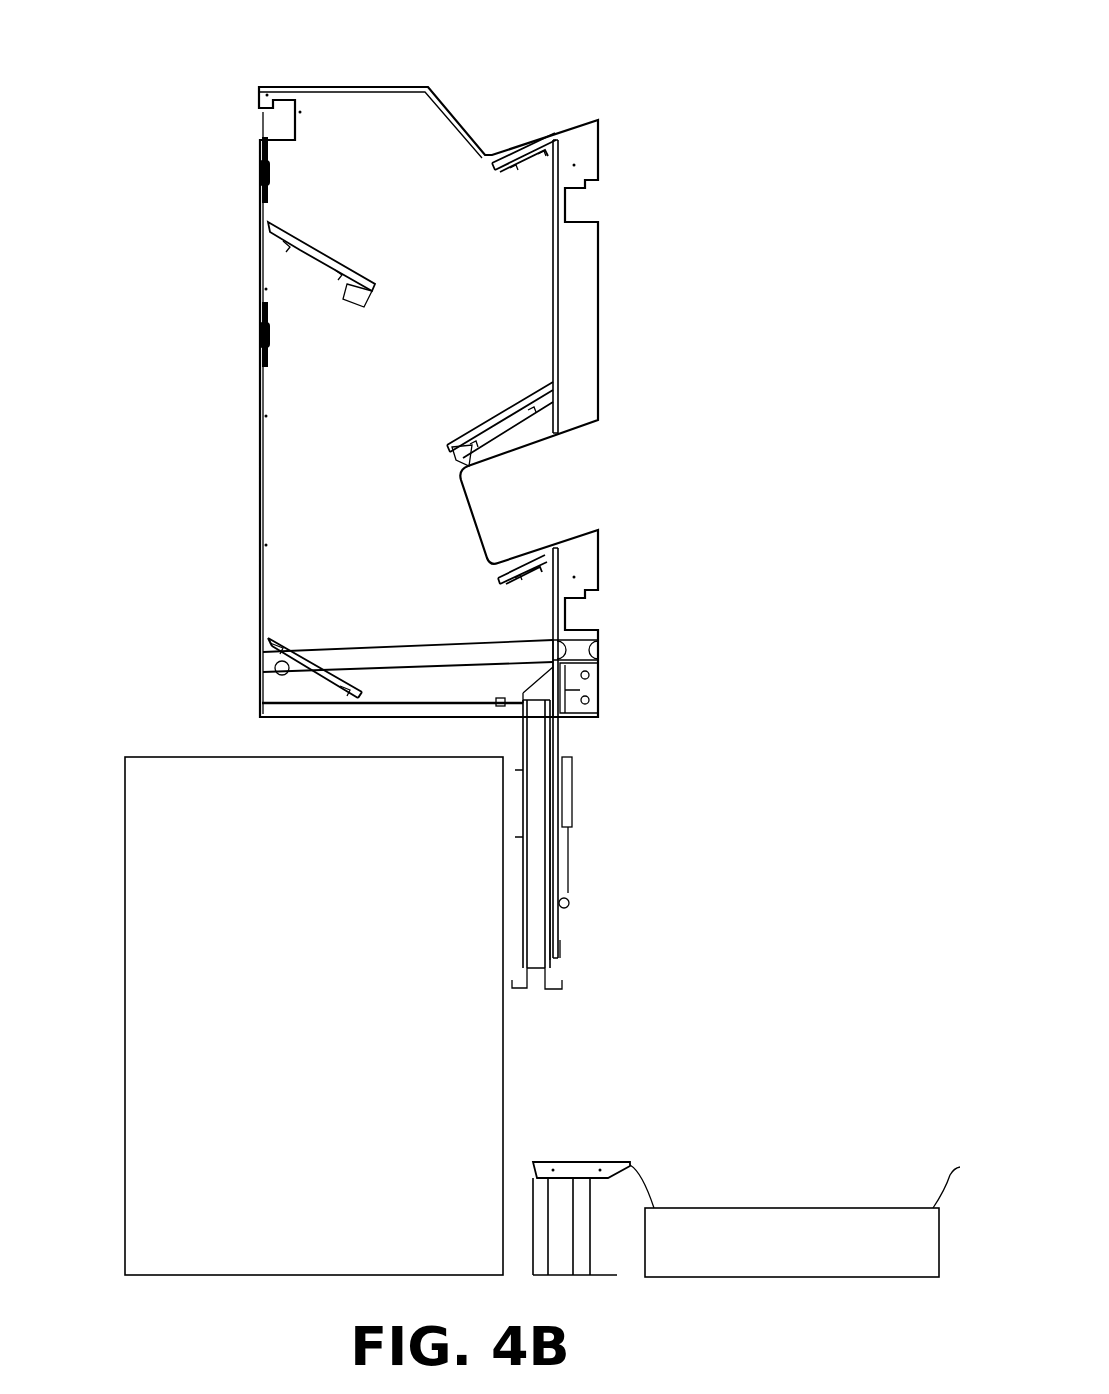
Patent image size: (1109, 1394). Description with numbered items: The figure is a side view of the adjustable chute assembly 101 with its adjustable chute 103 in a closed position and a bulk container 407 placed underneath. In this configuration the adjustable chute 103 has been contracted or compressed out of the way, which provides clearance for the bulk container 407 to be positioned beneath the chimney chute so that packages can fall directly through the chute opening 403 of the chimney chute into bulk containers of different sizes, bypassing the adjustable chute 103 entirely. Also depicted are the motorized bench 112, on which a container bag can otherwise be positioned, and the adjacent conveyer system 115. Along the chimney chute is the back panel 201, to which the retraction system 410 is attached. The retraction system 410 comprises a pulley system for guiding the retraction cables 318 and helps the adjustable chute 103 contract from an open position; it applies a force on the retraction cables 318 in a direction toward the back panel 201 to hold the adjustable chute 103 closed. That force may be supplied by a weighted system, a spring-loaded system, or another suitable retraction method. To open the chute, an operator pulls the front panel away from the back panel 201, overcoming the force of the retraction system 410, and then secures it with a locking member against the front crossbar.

The adjustable chute assembly 101 is at (646, 58).
The adjustable chute 103 is at (543, 1012).
The motorized bench 112 is at (580, 1162).
The conveyer system 115 is at (755, 1277).
The back panel 201 is at (558, 740).
The retraction cables 318 is at (584, 889).
The chute opening 403 is at (423, 680).
The bulk container 407 is at (125, 877).
The retraction system 410 is at (612, 818).